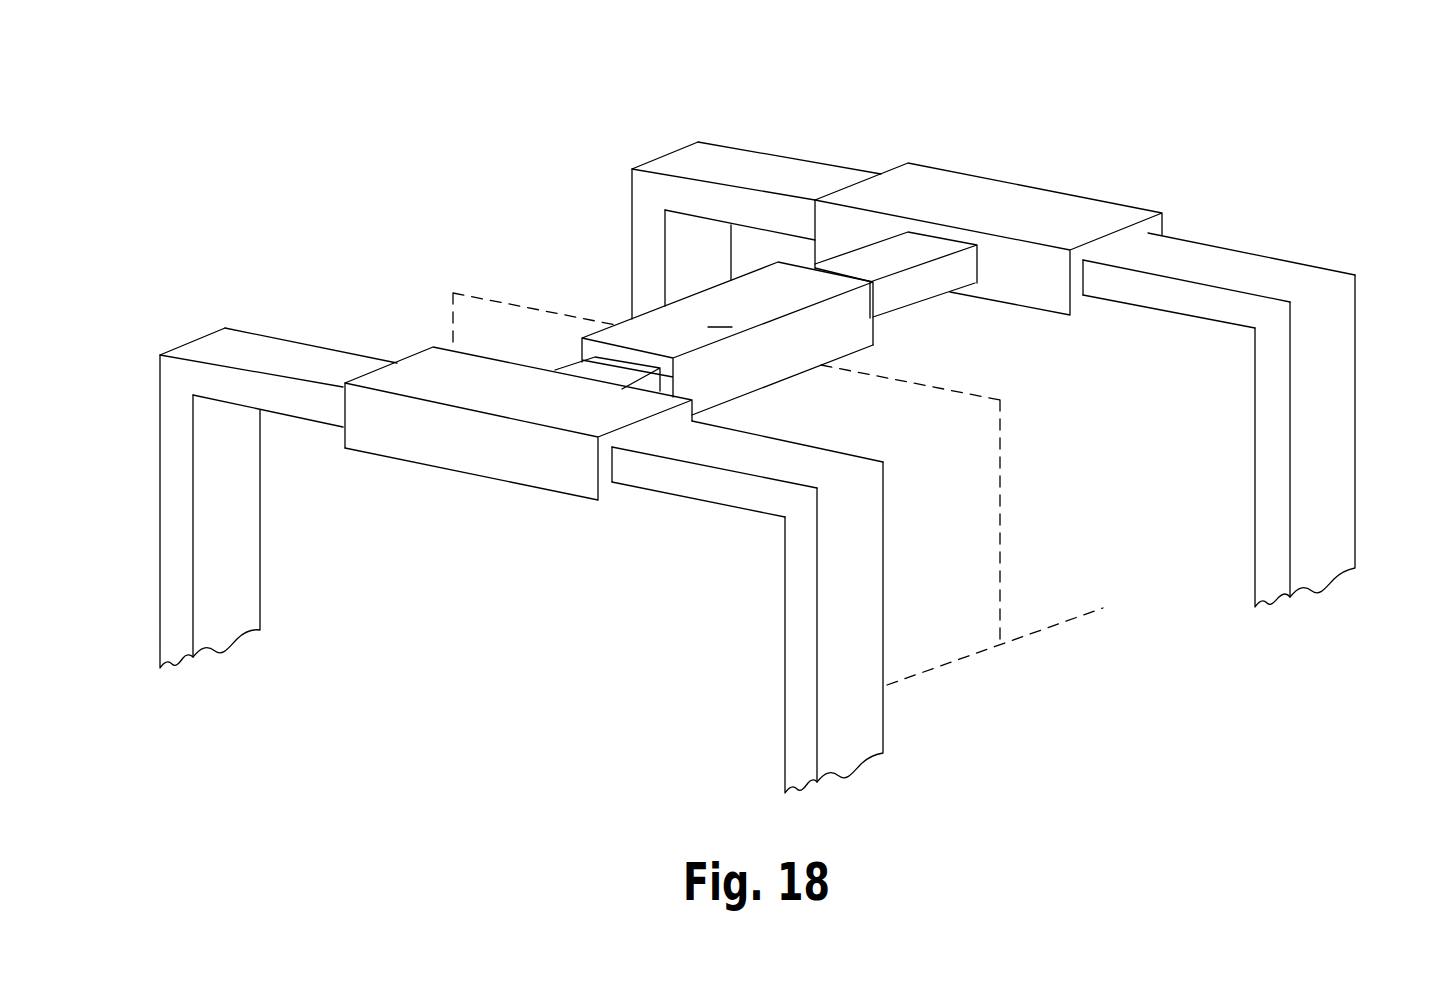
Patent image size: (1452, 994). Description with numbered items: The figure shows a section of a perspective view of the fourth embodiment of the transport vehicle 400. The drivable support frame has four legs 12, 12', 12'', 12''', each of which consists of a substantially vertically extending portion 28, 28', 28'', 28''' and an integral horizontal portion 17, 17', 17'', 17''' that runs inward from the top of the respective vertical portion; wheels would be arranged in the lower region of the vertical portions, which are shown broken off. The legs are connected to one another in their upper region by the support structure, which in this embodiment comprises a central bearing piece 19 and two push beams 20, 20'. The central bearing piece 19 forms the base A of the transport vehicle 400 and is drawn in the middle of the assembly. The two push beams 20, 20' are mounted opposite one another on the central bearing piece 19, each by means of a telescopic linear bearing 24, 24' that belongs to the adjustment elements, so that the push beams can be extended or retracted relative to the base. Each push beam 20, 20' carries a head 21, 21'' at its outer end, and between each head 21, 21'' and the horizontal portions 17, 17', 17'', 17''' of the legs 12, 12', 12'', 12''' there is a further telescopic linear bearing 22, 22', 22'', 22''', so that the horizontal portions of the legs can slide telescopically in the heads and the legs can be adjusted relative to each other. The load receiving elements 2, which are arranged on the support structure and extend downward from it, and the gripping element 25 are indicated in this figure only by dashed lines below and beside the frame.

The transport vehicle 400 is at (398, 110).
The load receiving elements 2 is at (1000, 455).
The leg 12 is at (638, 230).
The leg 12' is at (1347, 441).
The leg 12'' is at (790, 627).
The leg 12''' is at (164, 498).
The horizontal portion 17 is at (756, 155).
The horizontal portion 17' is at (1219, 247).
The horizontal portion 17'' is at (747, 511).
The horizontal portion 17''' is at (278, 348).
The central bearing piece 19 is at (660, 337).
The push beam 20 is at (914, 213).
The push beam 20' is at (562, 348).
The head 21 is at (988, 215).
The head 21'' is at (518, 467).
The telescopic linear bearing 22 is at (854, 171).
The telescopic linear bearing 22' is at (1141, 208).
The telescopic linear bearing 22'' is at (637, 524).
The telescopic linear bearing 22''' is at (316, 464).
The telescopic linear bearing 24 is at (791, 390).
The telescopic linear bearing 24' is at (942, 317).
The gripping element 25 is at (1059, 571).
The vertically extending portion 28 is at (605, 254).
The vertically extending portion 28' is at (1365, 449).
The vertically extending portion 28'' is at (757, 635).
The vertically extending portion 28''' is at (130, 526).